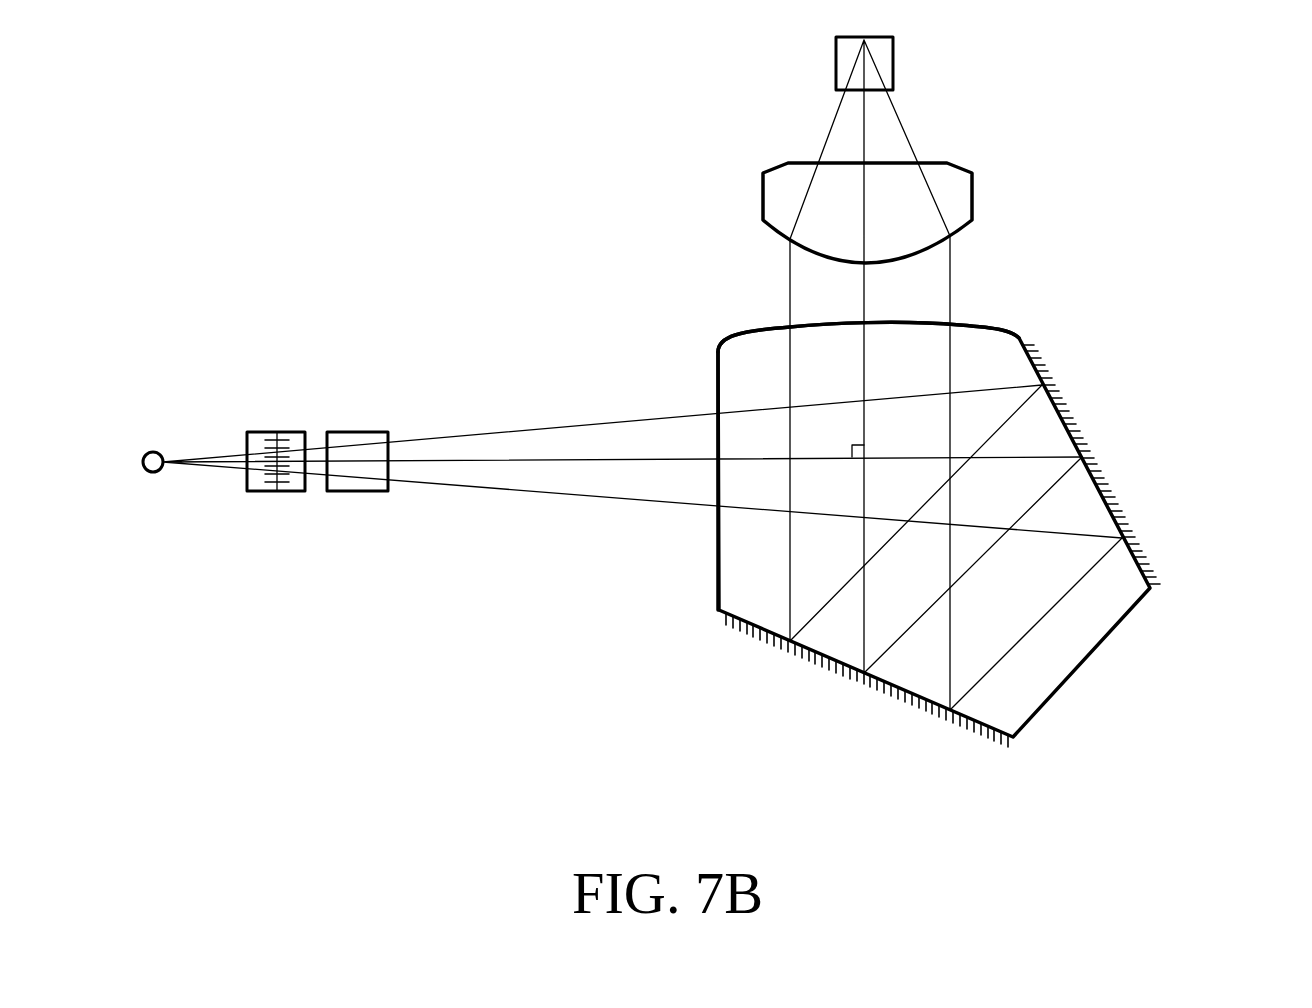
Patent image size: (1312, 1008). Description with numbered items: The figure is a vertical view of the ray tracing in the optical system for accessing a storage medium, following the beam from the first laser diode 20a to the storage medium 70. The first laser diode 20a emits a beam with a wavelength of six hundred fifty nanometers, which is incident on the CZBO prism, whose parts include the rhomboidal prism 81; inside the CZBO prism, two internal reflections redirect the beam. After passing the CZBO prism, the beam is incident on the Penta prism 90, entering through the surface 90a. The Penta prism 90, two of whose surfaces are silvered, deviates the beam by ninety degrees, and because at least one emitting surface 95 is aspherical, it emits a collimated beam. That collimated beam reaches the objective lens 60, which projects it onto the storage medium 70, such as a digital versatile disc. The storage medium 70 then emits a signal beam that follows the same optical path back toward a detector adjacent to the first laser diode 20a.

The storage medium 70 is at (836, 52).
The objective lens 60 is at (770, 197).
The top surface of prism 95 is at (818, 322).
The Penta prism 90 is at (1118, 508).
The incident surface of prism 90a is at (726, 561).
The first laser diode 20a is at (153, 450).
The rhomboidal prism 81 is at (277, 432).